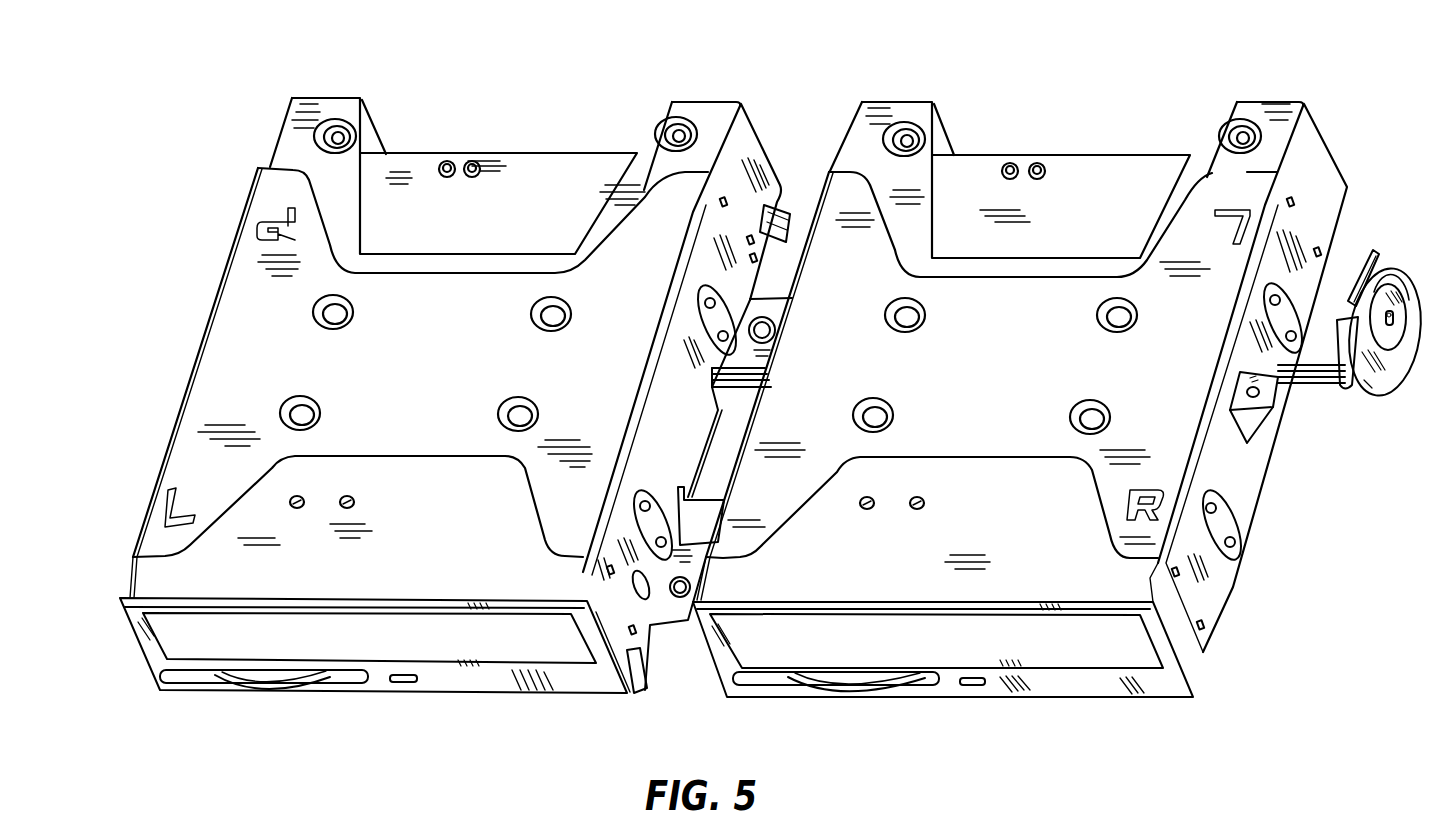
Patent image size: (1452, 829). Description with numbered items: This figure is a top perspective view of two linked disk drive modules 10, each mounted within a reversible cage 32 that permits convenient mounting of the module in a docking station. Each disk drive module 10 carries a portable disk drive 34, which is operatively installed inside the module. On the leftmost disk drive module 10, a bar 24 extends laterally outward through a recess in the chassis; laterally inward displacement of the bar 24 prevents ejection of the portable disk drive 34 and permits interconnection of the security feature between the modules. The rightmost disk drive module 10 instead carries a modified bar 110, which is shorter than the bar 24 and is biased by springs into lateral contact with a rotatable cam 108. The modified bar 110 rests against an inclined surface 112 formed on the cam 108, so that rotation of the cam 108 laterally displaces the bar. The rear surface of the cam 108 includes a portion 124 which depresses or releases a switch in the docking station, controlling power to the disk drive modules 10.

The disk drive module 10 is at (342, 82).
The bar 24 is at (720, 385).
The cage 32 is at (222, 292).
The portable disk drive 34 is at (207, 637).
The cam 108 is at (1390, 263).
The modified bar 110 is at (1297, 390).
The inclined surface 112 is at (1330, 383).
The portion 124 is at (1385, 257).